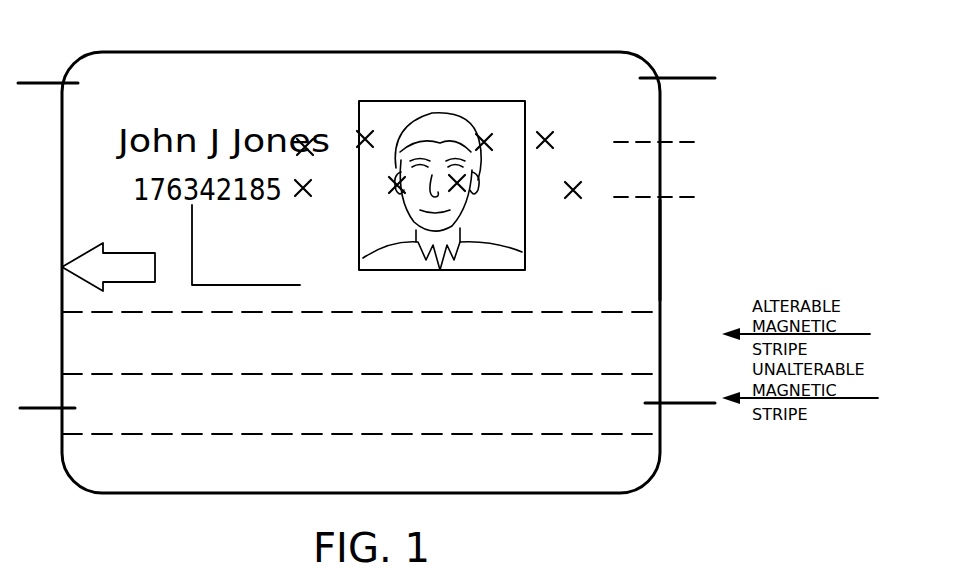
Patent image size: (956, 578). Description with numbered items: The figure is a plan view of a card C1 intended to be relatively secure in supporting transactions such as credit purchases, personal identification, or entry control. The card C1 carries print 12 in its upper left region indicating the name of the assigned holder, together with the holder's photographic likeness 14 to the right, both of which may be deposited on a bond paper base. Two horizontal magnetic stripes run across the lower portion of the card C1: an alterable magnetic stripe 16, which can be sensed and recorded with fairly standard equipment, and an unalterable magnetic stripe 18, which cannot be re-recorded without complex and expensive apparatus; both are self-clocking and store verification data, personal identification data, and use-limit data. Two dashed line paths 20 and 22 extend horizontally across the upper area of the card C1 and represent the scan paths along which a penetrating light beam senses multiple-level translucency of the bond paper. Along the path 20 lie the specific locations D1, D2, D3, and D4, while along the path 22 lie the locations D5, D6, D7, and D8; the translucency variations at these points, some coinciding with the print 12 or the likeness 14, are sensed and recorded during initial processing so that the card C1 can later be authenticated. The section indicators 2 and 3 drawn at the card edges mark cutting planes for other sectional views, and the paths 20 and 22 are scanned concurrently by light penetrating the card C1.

The print 12 is at (182, 122).
The photographic likeness 14 is at (471, 100).
The alterable magnetic stripe 16 is at (665, 336).
The unalterable magnetic stripe 18 is at (665, 388).
The dashed line path 20 is at (677, 146).
The dashed line path 22 is at (677, 196).
The card C1 is at (668, 247).
The location D1 is at (306, 140).
The location D2 is at (367, 136).
The location D3 is at (489, 138).
The location D4 is at (551, 138).
The location D5 is at (297, 196).
The location D6 is at (393, 190).
The location D7 is at (461, 192).
The location D8 is at (578, 190).
The section line 2- 2 is at (37, 96).
The section line 3- 3 is at (37, 420).